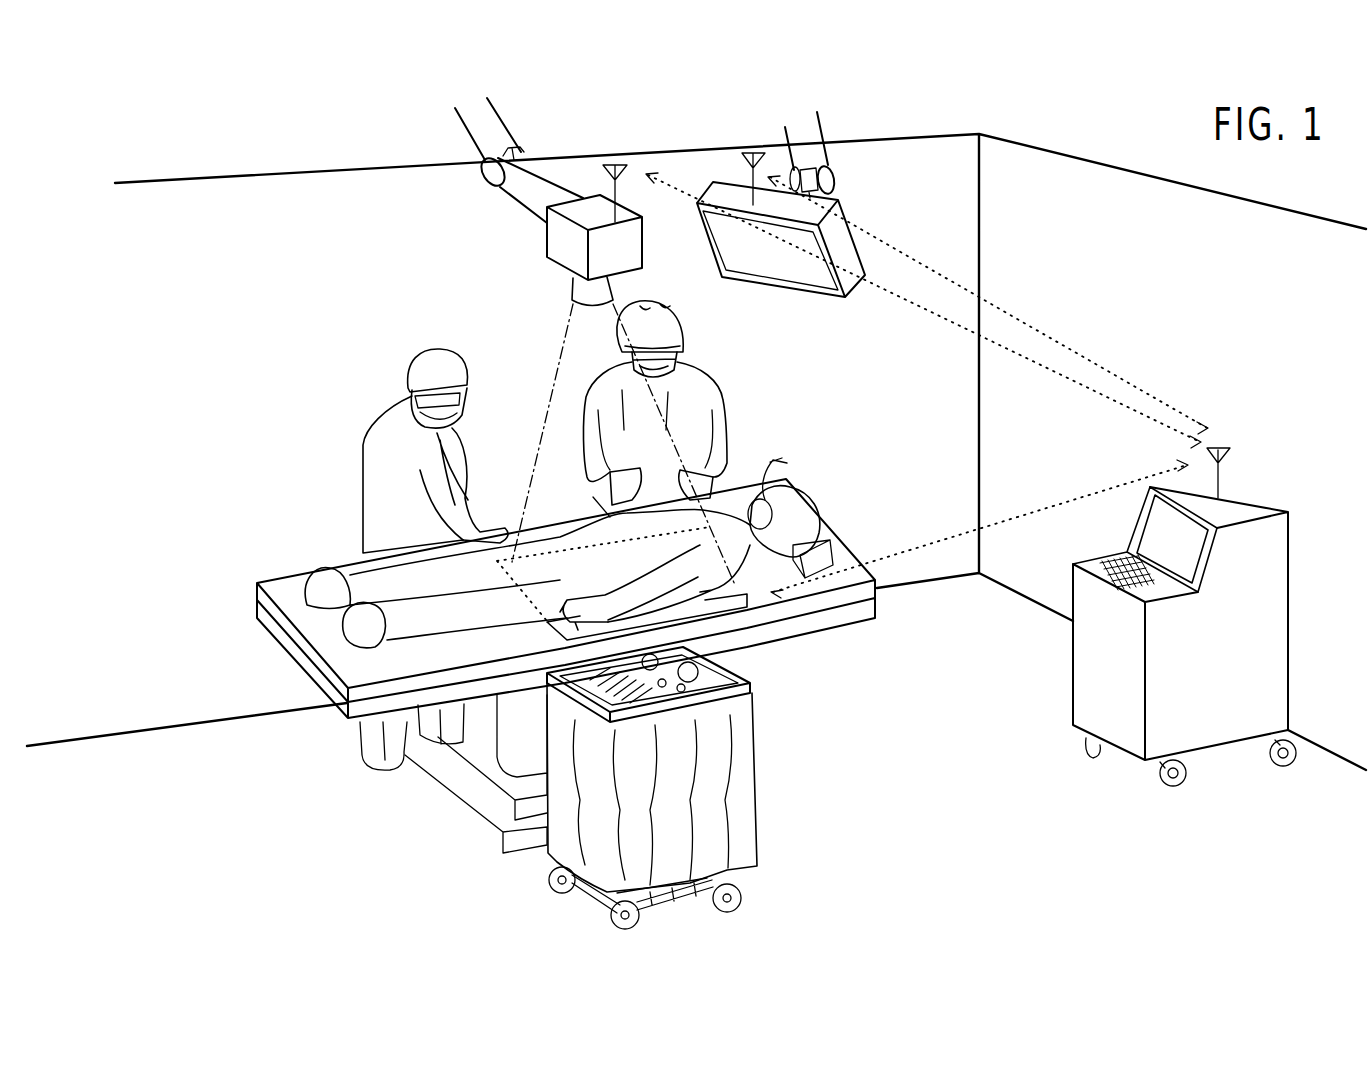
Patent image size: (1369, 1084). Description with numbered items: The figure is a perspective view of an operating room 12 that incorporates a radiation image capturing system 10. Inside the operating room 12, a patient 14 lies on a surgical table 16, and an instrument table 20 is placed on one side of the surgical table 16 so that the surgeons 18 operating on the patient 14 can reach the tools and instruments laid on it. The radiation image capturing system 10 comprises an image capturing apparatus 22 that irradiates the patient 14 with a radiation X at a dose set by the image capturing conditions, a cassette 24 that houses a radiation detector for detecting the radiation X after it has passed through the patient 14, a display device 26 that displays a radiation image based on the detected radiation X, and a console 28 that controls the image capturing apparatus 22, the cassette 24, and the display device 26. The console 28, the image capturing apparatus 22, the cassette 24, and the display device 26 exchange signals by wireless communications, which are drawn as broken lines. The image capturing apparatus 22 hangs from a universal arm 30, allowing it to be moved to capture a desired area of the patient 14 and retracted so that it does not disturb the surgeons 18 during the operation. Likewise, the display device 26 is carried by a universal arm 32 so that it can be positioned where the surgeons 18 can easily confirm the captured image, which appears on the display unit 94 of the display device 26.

The radiation image capturing system 10 is at (900, 426).
The operating room 12 is at (963, 212).
The patient 14 is at (355, 580).
The surgical table 16 is at (286, 582).
The surgeons 18 is at (385, 470).
The instrument table 20 is at (703, 748).
The image capturing apparatus 22 is at (547, 237).
The cassette 24 is at (560, 628).
The display device 26 is at (810, 246).
The console 28 is at (1083, 695).
The universal arm 30 is at (490, 123).
The universal arm 32 is at (812, 133).
The display unit 94 is at (765, 263).
The radiation X is at (554, 358).